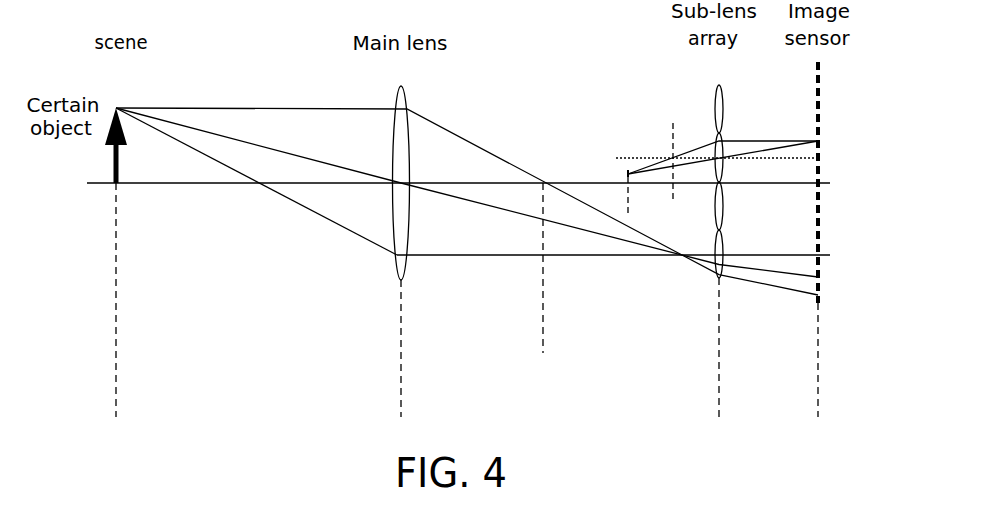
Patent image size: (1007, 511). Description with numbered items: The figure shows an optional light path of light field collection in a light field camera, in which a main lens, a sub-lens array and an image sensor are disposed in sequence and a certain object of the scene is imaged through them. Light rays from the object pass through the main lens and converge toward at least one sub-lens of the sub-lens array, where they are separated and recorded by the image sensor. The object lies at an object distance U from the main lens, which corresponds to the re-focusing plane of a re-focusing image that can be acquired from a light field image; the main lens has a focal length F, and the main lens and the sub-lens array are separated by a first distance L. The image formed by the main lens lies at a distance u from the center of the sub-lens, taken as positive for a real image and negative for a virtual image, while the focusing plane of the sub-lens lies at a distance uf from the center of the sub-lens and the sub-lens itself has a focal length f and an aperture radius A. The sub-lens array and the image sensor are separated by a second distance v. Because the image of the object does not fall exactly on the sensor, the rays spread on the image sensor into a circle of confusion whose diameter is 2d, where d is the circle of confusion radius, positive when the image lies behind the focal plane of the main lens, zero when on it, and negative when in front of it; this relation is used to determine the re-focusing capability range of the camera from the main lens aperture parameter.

The object distance U is at (116, 328).
The focal length of the main lens F is at (401, 328).
The first distance L is at (401, 381).
The distance from the image to the center of the sub-lens u is at (752, 309).
The second distance v is at (818, 356).
The focal length of the sub-lens f is at (673, 128).
The distance from the focusing plane of the sub-lens to the center of the sub-lens uf is at (719, 211).
The sub-lens aperture radius A is at (762, 303).
The circle of confusion diameter 2d is at (847, 208).